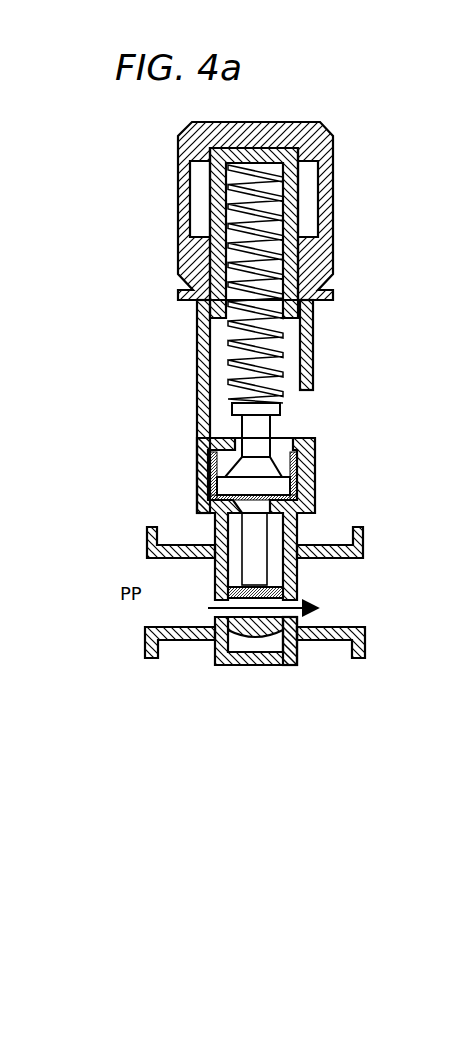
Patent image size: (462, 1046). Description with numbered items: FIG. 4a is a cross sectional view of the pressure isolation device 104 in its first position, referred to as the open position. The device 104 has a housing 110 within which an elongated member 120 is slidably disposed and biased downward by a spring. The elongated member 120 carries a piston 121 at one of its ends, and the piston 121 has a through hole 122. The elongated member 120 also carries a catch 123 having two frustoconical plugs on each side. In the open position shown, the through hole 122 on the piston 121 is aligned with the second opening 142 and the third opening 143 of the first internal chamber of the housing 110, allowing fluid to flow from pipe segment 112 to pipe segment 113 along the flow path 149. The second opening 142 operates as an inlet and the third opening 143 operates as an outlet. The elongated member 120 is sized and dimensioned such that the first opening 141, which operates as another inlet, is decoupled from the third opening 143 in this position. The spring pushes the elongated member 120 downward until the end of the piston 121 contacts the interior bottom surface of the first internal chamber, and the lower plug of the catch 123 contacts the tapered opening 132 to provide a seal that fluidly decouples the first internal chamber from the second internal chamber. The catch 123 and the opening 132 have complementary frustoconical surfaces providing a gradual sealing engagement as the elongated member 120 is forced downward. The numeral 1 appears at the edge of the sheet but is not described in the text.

The pressure isolation device 104 is at (153, 178).
The housing 110 is at (300, 114).
The elongated member 120 is at (232, 454).
The piston 121 is at (268, 640).
The through hole 122 is at (250, 612).
The catch 123 is at (287, 487).
The opening 132 is at (245, 510).
The first opening 141 is at (214, 562).
The second opening 142 is at (222, 604).
The third opening 143 is at (297, 613).
The flow path 149 is at (312, 603).
The pipe segment 112 is at (147, 652).
The pipe segment 113 is at (365, 648).
The regulator system 1 is at (457, 266).